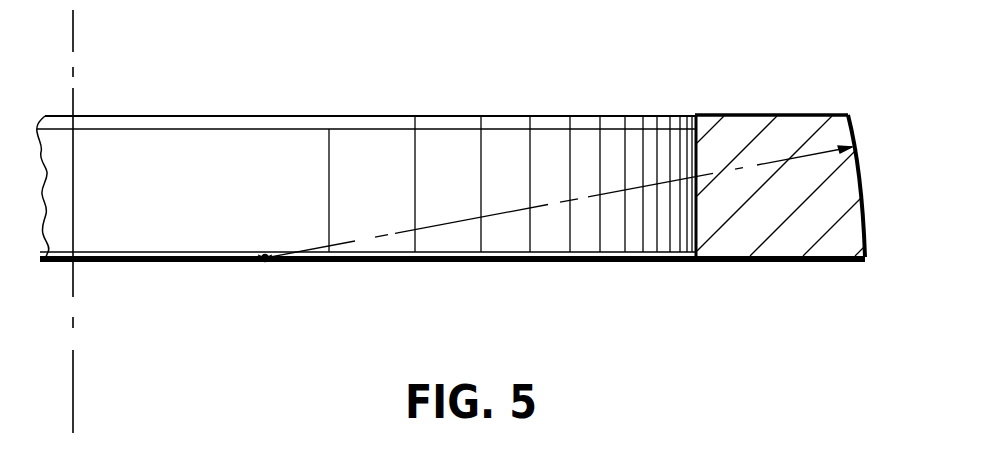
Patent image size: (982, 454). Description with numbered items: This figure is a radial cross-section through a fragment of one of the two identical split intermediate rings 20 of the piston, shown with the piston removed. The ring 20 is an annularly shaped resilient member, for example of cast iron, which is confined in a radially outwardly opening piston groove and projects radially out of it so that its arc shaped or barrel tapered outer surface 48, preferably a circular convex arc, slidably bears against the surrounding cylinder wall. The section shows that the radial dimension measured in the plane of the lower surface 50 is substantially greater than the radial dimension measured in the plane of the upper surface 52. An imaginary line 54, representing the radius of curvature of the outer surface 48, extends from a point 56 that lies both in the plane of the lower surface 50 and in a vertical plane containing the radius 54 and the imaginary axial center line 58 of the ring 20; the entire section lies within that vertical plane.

The split intermediate ring 20 is at (738, 123).
The outer surface 48 is at (868, 157).
The lower surface 50 is at (772, 262).
The upper surface 52 is at (753, 116).
The imaginary line 54 is at (457, 218).
The point 56 is at (263, 262).
The axial center line 58 is at (75, 363).